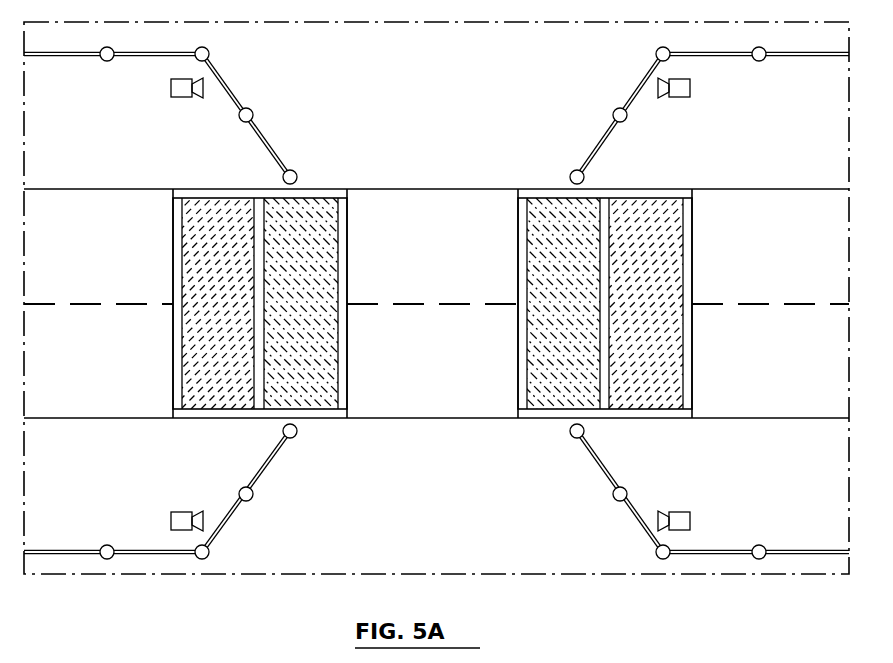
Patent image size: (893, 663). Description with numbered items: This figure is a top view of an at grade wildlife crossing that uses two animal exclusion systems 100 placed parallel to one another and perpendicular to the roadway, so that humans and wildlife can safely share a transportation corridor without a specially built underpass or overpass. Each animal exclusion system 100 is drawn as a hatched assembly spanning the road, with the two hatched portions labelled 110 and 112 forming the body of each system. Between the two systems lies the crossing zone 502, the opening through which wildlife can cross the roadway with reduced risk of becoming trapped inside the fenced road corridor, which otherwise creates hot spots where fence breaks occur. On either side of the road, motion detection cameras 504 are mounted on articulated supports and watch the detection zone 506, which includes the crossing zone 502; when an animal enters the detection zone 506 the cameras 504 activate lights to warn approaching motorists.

The animal exclusion system 100 is at (745, 230).
The first barrier panel 110 is at (303, 222).
The second barrier panel 112 is at (203, 364).
The crossing zone 502 is at (453, 369).
The motion detection camera 504 is at (171, 87).
The detection zone 506 is at (455, 83).